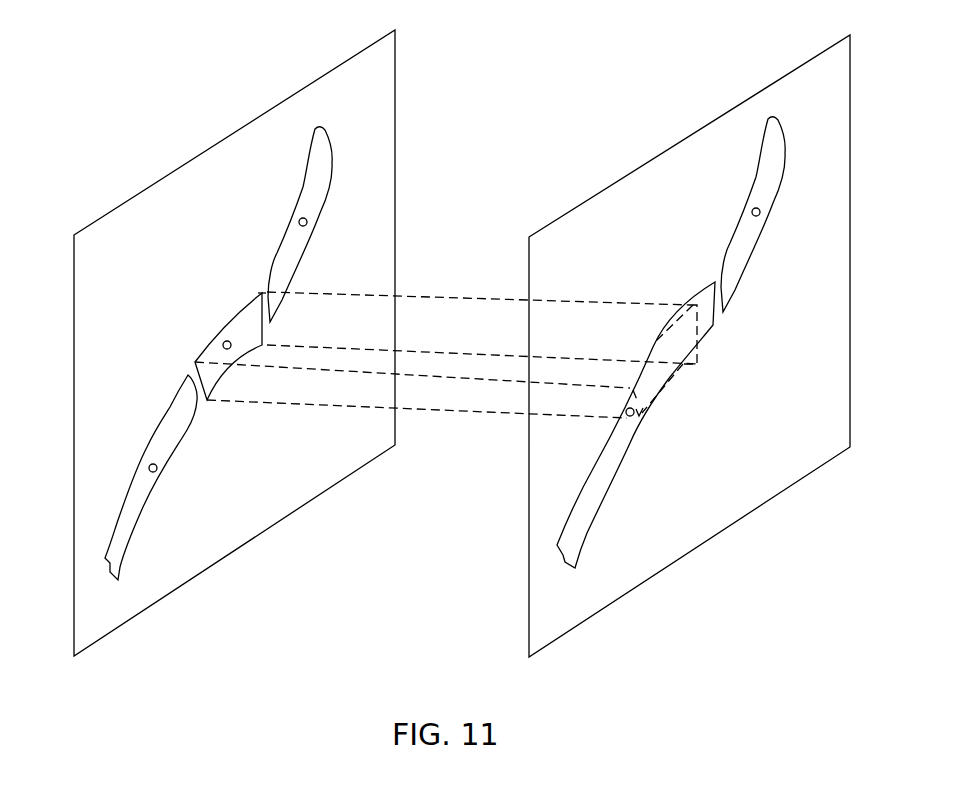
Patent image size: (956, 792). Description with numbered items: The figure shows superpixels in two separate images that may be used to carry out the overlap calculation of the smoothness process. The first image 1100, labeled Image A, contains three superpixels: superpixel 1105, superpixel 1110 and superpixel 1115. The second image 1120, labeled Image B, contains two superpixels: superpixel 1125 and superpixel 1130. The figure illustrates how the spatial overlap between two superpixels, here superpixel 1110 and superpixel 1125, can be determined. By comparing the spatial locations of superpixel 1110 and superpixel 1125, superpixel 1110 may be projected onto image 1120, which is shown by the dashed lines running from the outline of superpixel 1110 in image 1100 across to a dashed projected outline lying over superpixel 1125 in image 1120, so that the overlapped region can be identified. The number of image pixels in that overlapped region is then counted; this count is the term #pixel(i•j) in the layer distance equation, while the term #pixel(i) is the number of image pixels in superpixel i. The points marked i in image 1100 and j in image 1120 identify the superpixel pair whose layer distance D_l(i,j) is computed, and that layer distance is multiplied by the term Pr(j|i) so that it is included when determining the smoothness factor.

The image 1100 is at (248, 538).
The image 1120 is at (698, 548).
The superpixel 1105 is at (127, 515).
The superpixel 1110 is at (240, 310).
The superpixel 1115 is at (317, 148).
The superpixel 1125 is at (578, 507).
The superpixel 1130 is at (768, 138).
The superpixel i is at (210, 343).
The superpixel j is at (630, 442).